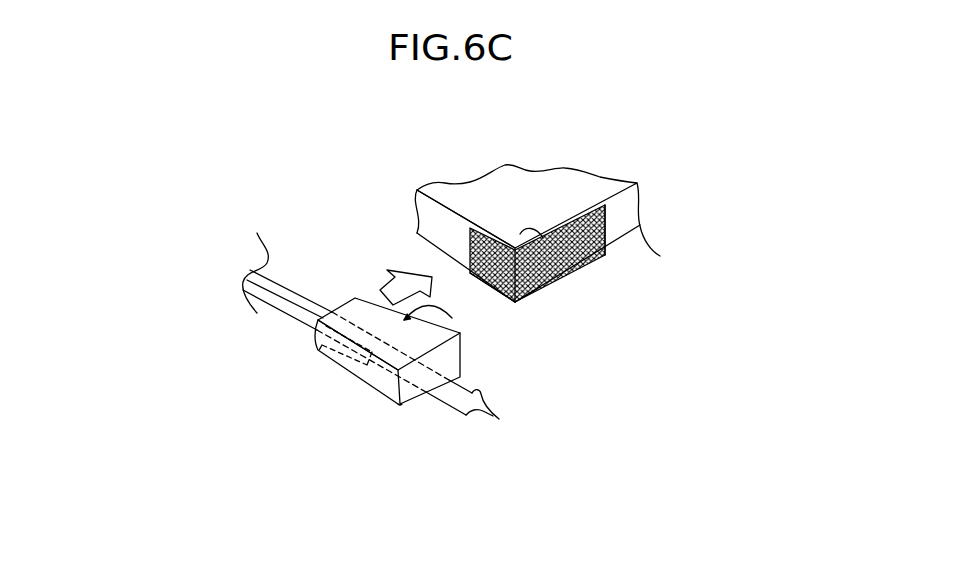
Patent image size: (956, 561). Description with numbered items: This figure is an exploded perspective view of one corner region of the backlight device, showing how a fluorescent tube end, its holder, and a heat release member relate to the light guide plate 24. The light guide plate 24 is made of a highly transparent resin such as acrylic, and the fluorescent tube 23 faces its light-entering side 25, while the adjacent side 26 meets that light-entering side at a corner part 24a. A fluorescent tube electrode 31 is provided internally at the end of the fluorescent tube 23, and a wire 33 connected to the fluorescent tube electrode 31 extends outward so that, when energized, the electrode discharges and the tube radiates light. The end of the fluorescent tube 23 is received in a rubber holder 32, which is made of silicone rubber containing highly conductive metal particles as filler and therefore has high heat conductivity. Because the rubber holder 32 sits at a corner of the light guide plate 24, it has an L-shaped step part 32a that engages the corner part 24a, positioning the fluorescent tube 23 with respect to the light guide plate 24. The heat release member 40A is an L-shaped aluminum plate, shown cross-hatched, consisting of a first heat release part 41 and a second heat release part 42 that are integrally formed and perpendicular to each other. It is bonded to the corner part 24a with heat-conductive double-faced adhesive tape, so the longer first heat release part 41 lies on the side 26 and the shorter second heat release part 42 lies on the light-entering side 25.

The fluorescent tube 23 is at (310, 303).
The light guide plate 24 is at (543, 192).
The corner part of the light guide plate 24a is at (557, 277).
The light-entering side 25 is at (438, 215).
The side of the light guide plate 26 is at (618, 222).
The fluorescent tube electrode 31 is at (328, 352).
The rubber holder 32 is at (373, 382).
The L-shaped step part 32a is at (449, 315).
The wire 33 is at (476, 408).
The heat release member 40A is at (578, 255).
The first heat release part 41 is at (603, 255).
The second heat release part 42 is at (501, 292).